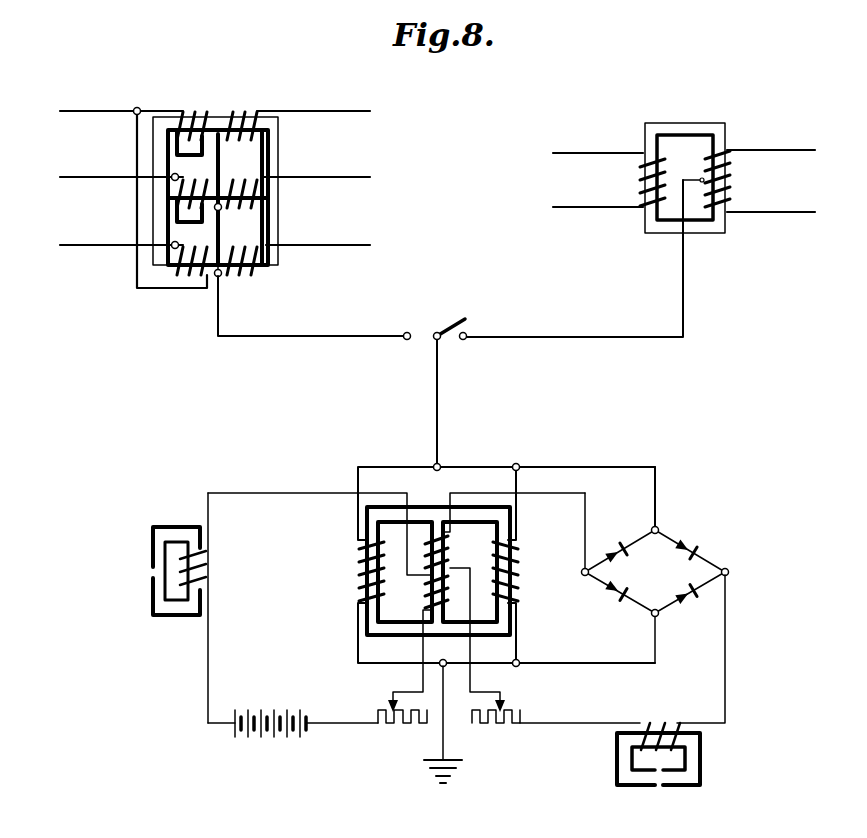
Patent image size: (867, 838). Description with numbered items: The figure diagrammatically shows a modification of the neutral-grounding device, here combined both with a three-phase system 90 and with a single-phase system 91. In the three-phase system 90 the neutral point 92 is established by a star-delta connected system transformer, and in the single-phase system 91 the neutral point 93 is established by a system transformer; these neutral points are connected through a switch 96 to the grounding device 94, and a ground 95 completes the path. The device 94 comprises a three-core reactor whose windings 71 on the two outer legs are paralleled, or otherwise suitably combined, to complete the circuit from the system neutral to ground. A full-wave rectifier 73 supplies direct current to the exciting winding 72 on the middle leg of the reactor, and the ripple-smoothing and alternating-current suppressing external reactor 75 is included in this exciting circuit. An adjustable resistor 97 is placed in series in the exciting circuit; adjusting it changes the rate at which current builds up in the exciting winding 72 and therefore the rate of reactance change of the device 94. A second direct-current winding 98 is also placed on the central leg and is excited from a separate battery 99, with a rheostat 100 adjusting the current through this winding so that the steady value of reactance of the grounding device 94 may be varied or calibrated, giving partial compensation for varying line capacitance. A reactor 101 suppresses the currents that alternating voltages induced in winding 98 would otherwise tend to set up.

The three-phase system 90 is at (222, 98).
The single-phase system 91 is at (686, 110).
The neutral point 92 is at (219, 313).
The neutral point 93 is at (683, 293).
The neutral-grounding device 94 is at (480, 456).
The switch 96 is at (450, 323).
The windings 71 is at (364, 567).
The exciting winding 72 is at (448, 549).
The second direct-current winding 98 is at (428, 601).
The full-wave rectifier 73 is at (664, 588).
The external reactor 75 is at (701, 763).
The battery 99 is at (282, 702).
The rheostat 100 is at (402, 727).
The ground 95 is at (443, 744).
The adjustable resistor 97 is at (489, 727).
The reactor 101 is at (204, 567).